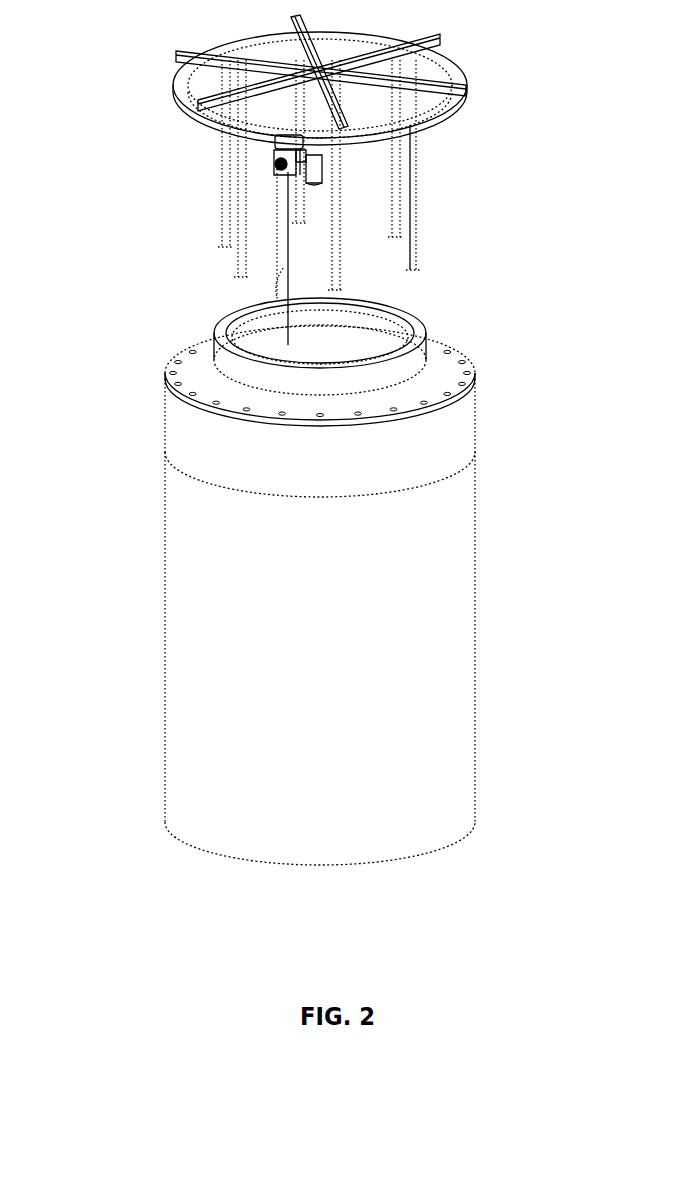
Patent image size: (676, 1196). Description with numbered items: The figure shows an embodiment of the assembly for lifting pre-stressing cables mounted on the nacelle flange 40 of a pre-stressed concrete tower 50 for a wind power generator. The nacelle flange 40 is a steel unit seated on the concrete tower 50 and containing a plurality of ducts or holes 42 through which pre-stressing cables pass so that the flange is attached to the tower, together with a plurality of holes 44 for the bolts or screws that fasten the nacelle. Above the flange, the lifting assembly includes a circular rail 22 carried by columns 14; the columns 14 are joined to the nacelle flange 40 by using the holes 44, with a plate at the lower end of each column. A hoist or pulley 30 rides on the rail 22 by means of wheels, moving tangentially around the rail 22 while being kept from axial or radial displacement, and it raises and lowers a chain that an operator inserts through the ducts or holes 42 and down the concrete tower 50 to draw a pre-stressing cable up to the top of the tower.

The columns 14 is at (415, 204).
The rail 22 is at (192, 105).
The hoist/pulley 30 is at (277, 163).
The nacelle flange 40 is at (447, 423).
The ducts/holes for pre-stress cable 42 is at (408, 348).
The holes for fastening bolts of nacelle flange 44 is at (235, 408).
The container body 50 is at (360, 677).